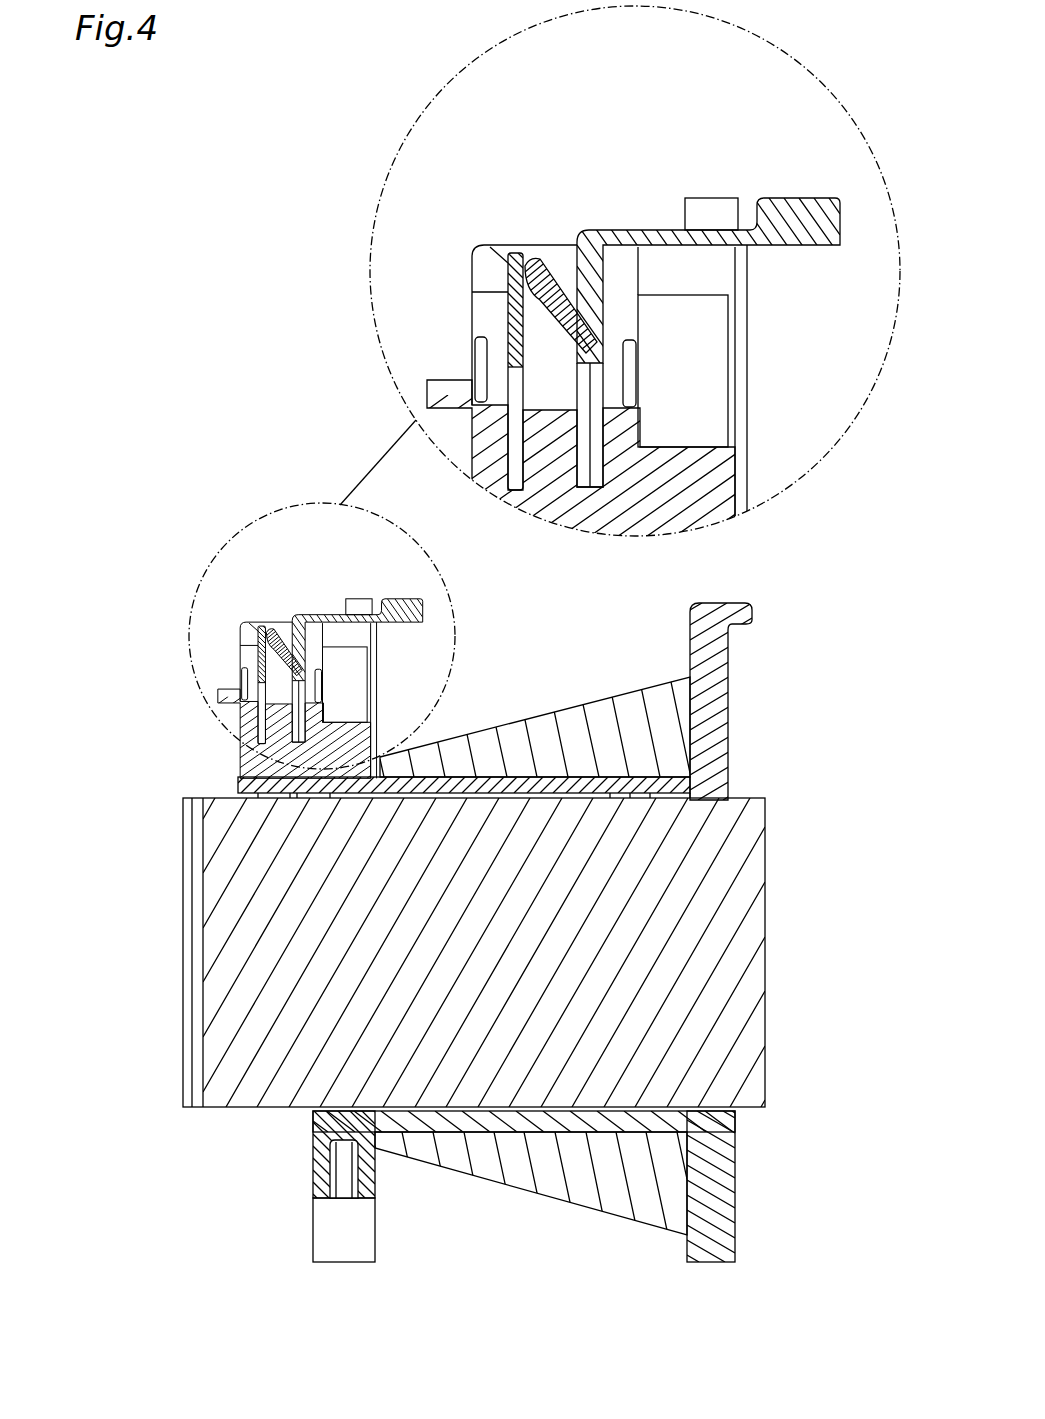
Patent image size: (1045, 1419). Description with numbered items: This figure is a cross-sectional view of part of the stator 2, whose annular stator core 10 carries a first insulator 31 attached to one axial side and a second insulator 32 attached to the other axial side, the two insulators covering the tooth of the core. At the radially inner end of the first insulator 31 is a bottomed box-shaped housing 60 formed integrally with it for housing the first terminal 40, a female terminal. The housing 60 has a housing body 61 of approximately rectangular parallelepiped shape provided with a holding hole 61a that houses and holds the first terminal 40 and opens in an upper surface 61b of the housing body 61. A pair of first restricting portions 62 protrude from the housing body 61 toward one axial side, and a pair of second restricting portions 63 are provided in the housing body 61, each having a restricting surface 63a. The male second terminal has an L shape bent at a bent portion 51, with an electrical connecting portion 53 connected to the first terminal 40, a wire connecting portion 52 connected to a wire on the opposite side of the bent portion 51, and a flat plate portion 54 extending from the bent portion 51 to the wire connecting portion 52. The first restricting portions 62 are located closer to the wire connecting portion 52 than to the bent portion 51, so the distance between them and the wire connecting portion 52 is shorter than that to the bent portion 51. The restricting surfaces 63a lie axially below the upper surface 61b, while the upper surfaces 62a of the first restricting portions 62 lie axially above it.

The stator 2 is at (157, 520).
The stator core 10 is at (770, 960).
The first insulator 31 is at (732, 718).
The second insulator 32 is at (740, 1168).
The first terminal 40 is at (503, 325).
The bent portion 51 is at (586, 242).
The wire connecting portion 52 is at (814, 213).
The electrical connecting portion 53 is at (582, 298).
The flat plate portion 54 is at (673, 241).
The housing 60 is at (482, 376).
The housing body 61 is at (455, 272).
The holding hole 61a is at (488, 303).
The upper surface 61b is at (547, 246).
The first restricting portions 62 is at (706, 160).
The upper surfaces 62a is at (714, 196).
The second restricting portions 63 is at (741, 402).
The restricting surface 63a is at (708, 296).